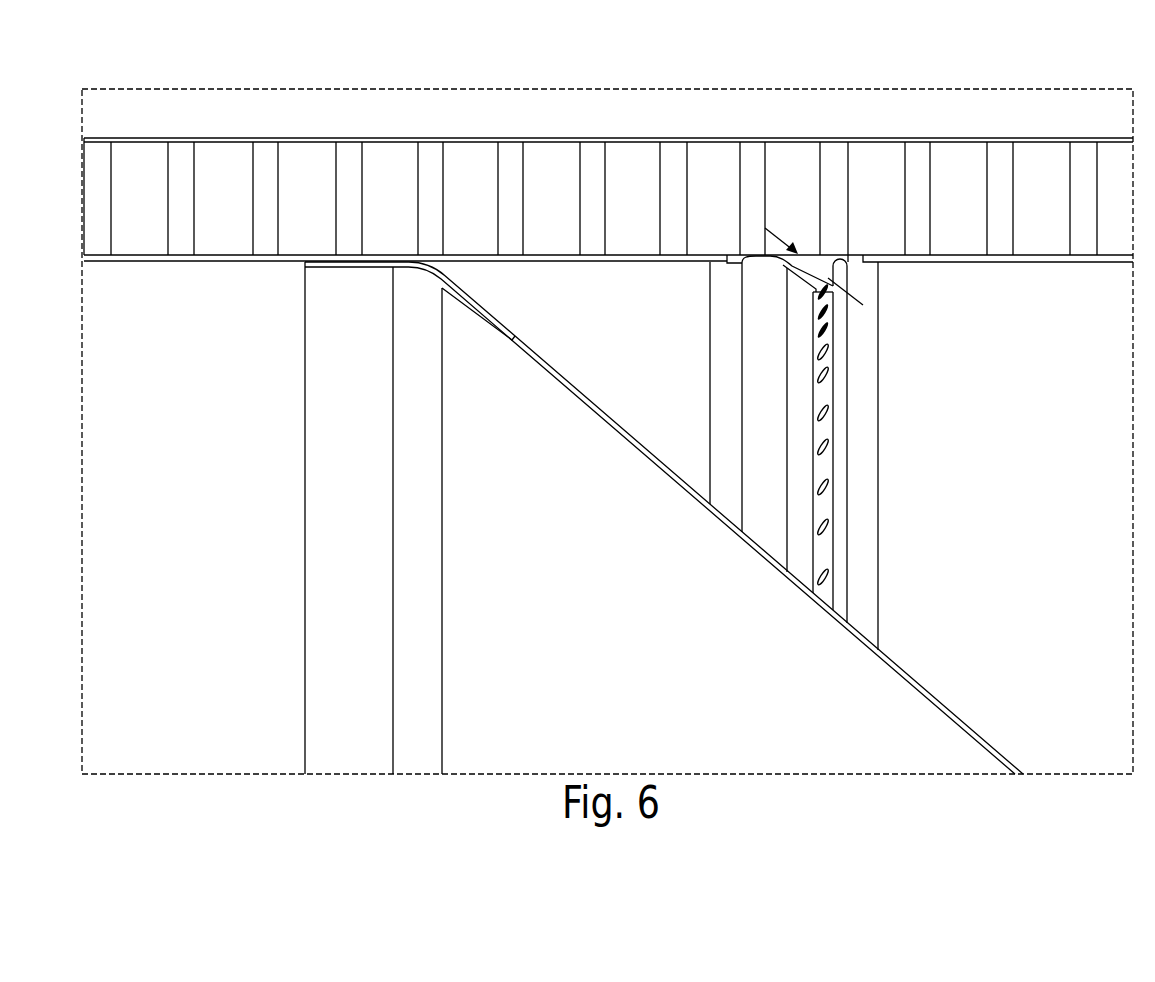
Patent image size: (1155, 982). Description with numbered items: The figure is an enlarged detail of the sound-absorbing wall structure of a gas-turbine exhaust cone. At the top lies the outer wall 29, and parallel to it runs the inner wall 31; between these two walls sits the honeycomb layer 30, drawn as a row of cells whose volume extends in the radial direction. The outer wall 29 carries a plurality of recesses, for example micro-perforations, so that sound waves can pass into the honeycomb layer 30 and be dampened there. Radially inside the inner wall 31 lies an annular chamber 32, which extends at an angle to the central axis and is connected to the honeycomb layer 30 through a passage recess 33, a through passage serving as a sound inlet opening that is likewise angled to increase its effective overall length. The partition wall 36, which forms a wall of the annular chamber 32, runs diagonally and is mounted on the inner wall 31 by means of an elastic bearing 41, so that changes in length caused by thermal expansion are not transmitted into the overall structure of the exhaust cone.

The outer wall 29 is at (462, 138).
The honeycomb layer 30 is at (546, 178).
The inner wall 31 is at (203, 263).
The annular chamber 32 is at (608, 340).
The passage recess 33 is at (818, 282).
The partition wall 36 is at (590, 417).
The elastic bearing 41 is at (433, 277).